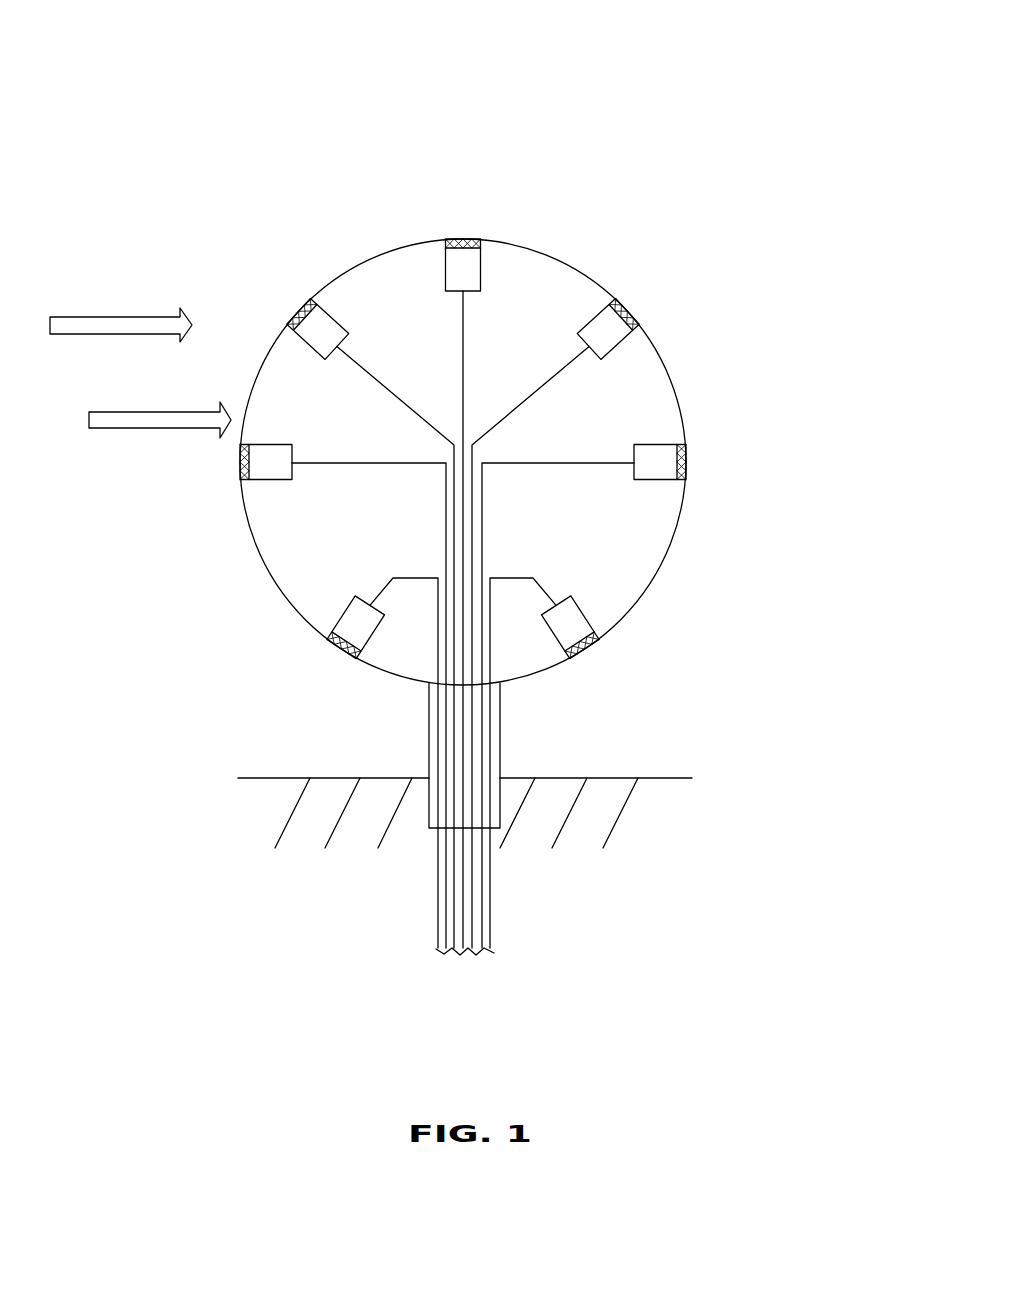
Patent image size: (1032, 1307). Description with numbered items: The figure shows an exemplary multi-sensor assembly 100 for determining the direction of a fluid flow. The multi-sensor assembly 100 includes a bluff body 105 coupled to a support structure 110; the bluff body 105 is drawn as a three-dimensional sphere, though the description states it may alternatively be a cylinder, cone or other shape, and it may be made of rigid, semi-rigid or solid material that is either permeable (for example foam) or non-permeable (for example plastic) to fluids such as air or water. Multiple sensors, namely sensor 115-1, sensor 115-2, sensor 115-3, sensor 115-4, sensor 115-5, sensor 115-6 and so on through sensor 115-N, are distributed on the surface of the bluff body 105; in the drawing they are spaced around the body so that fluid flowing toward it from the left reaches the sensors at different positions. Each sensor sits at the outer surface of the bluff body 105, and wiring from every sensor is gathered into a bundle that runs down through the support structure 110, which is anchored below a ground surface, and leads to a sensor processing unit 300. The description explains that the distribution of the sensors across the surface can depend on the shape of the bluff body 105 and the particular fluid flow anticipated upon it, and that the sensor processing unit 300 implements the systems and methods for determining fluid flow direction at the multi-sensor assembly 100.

The multi-sensor assembly 100 is at (488, 38).
The bluff body 105 is at (562, 241).
The support structure 110 is at (582, 863).
The sensor 115-1 is at (326, 663).
The sensor 115-2 is at (228, 478).
The sensor 115-3 is at (278, 306).
The sensor 115-4 is at (463, 224).
The sensor 115-5 is at (640, 292).
The sensor 115-6 is at (701, 478).
The sensor 115-N is at (600, 662).
The sensor processing unit 300 is at (475, 997).